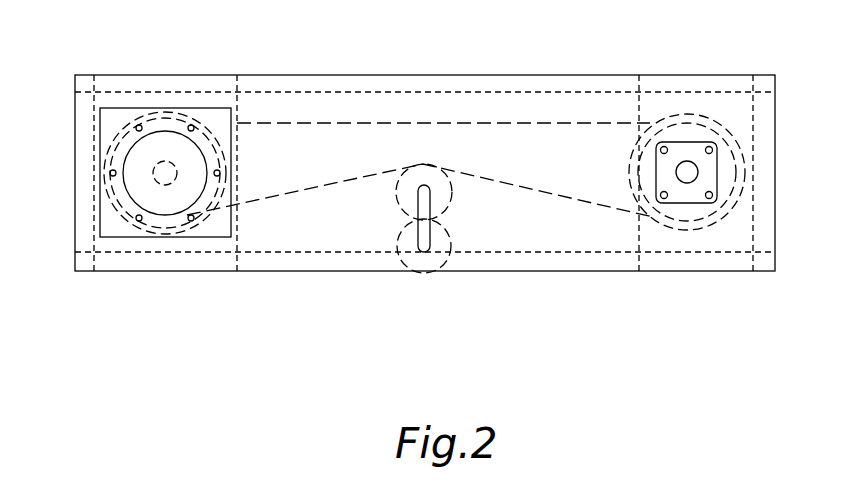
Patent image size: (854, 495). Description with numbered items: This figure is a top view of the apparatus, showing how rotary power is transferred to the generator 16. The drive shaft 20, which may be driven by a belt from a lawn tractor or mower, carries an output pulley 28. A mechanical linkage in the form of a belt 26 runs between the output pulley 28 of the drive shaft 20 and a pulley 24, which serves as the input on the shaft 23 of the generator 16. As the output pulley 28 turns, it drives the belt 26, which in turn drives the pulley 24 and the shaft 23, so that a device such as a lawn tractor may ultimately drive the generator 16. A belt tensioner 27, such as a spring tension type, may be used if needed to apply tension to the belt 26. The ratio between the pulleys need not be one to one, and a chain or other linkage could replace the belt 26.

The generator 16 is at (118, 115).
The drive shaft 20 is at (690, 170).
The shaft 23 is at (156, 176).
The pulley 24 is at (136, 139).
The belt 26 is at (426, 123).
The belt tensioner 27 is at (433, 219).
The output pulley 28 is at (702, 123).